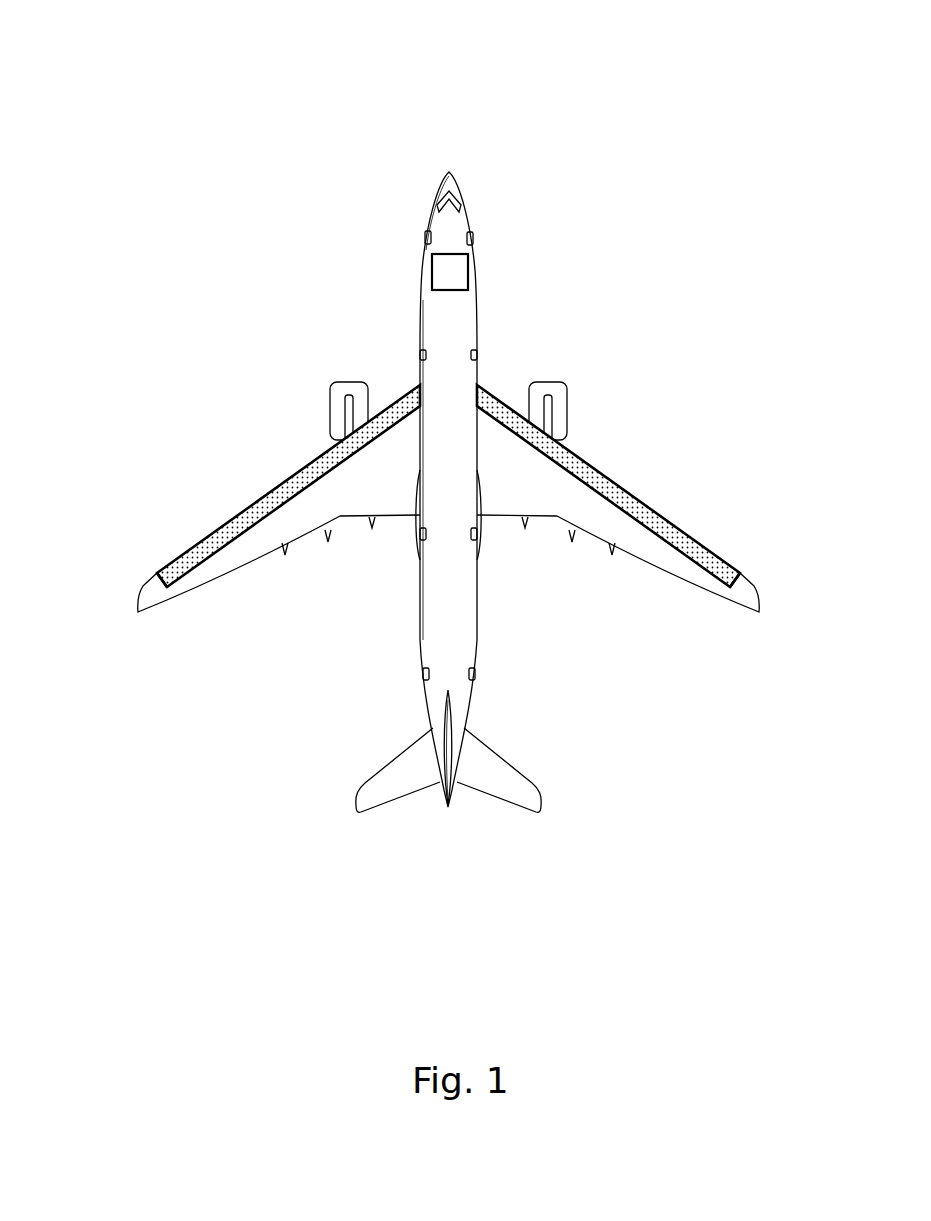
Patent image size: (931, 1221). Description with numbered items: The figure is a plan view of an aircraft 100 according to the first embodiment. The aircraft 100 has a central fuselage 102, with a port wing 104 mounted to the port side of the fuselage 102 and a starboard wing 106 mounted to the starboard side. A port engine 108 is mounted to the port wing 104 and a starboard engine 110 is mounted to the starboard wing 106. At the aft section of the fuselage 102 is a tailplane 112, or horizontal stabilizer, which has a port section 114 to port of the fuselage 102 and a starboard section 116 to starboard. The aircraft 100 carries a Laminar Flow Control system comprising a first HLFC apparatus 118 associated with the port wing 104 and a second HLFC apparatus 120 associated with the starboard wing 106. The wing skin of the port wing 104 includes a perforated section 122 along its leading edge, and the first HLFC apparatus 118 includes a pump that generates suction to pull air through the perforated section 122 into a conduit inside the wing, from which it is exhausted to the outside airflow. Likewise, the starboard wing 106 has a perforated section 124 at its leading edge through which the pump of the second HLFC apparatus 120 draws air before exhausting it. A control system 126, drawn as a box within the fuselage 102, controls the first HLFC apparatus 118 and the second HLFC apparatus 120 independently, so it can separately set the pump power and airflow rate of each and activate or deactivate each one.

The aircraft 100 is at (217, 126).
The fuselage 102 is at (452, 327).
The port wing 104 is at (252, 540).
The starboard wing 106 is at (628, 528).
The port engine 108 is at (338, 406).
The starboard engine 110 is at (560, 410).
The tailplane 112 is at (525, 804).
The port section 114 is at (385, 792).
The starboard section 116 is at (509, 792).
The first HLFC apparatus 118 is at (238, 483).
The second HLFC apparatus 120 is at (660, 482).
The perforated section 122 is at (180, 562).
The perforated section 124 is at (700, 548).
The control system 126 is at (430, 268).